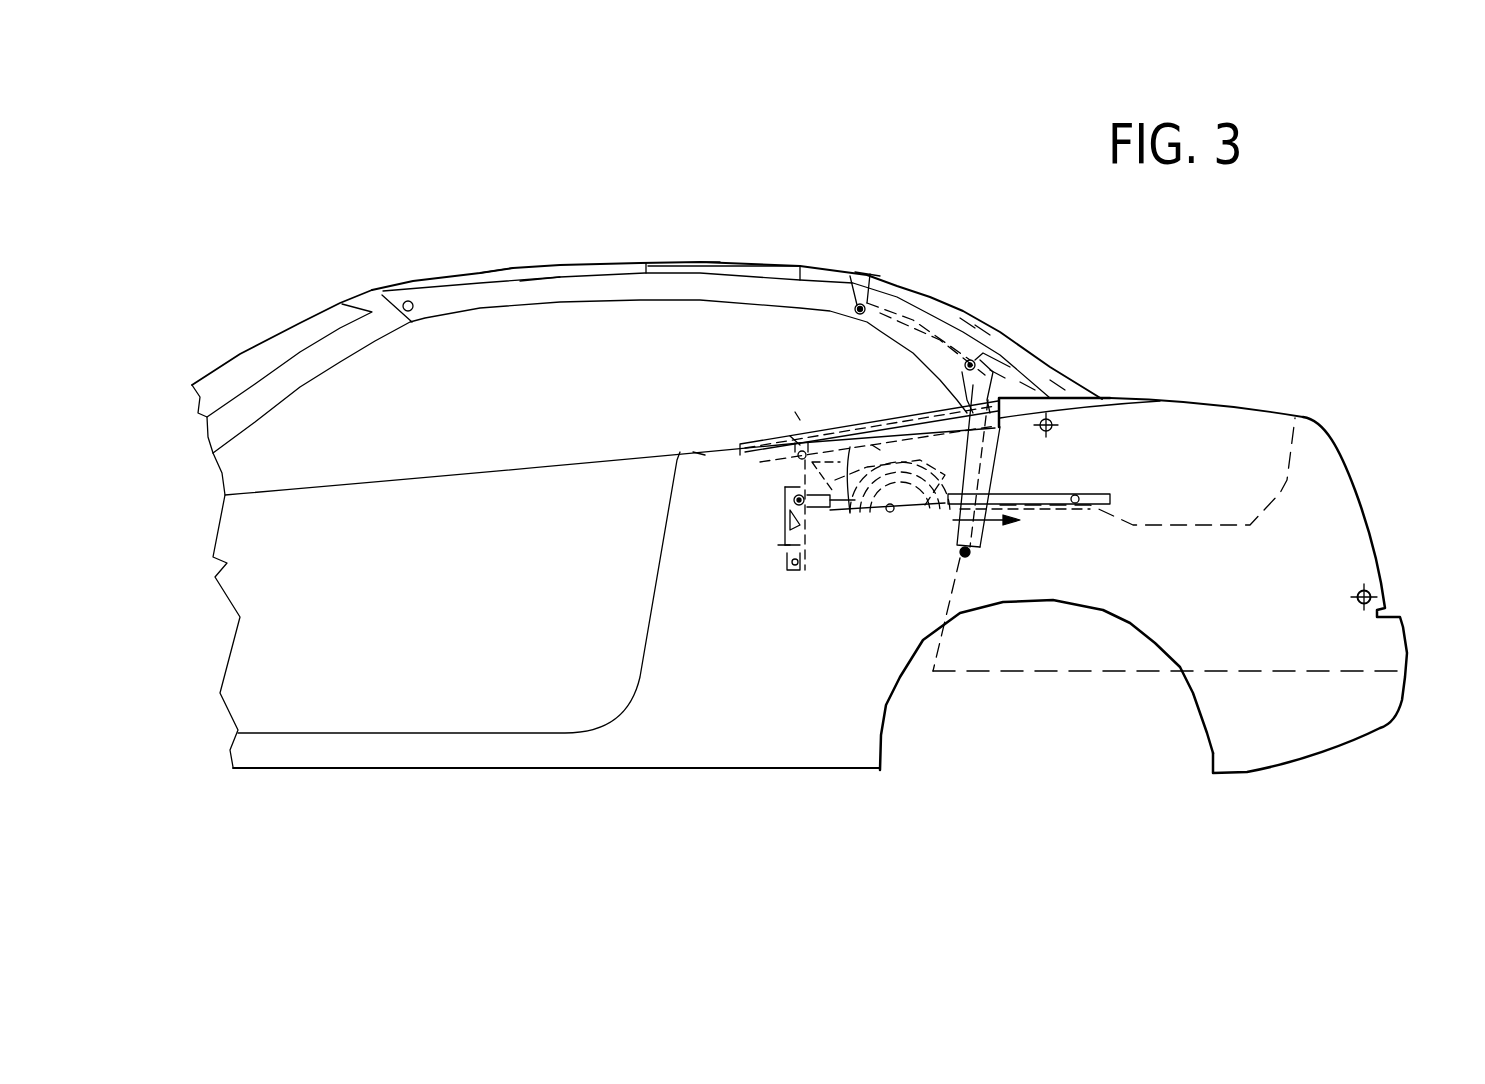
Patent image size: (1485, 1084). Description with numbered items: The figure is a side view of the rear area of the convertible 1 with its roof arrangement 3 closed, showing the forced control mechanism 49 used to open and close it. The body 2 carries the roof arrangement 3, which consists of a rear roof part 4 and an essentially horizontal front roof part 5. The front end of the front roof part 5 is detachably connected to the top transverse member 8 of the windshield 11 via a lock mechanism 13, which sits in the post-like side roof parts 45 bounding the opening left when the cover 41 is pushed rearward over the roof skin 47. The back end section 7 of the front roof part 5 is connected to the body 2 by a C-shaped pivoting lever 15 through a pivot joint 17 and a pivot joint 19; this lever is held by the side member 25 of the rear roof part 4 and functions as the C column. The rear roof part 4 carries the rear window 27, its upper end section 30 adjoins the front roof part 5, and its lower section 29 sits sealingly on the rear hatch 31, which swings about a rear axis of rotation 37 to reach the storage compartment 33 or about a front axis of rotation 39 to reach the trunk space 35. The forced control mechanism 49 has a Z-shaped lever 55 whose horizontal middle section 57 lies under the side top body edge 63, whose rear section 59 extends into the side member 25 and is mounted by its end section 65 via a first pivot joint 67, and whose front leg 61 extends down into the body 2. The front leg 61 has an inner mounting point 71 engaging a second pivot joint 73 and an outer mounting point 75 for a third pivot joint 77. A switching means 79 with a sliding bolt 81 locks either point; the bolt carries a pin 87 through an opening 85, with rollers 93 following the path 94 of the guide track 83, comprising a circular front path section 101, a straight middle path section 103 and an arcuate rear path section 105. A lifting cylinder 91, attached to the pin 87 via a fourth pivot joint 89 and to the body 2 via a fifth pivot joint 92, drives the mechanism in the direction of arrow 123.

The convertible 1 is at (388, 235).
The body 2 is at (688, 683).
The roof arrangement 3 is at (741, 254).
The rear roof part 4 is at (963, 318).
The front roof part 5 is at (661, 268).
The back end section 7 is at (838, 277).
The top transverse member 8 is at (374, 298).
The windshield 11 is at (278, 348).
The lock mechanism 13 is at (410, 301).
The pivoting lever 15 is at (927, 340).
The pivot joint 17 is at (863, 304).
The pivot joint 19 is at (977, 556).
The side member 25 is at (957, 305).
The rear window 27 is at (990, 340).
The lower section 29 is at (1058, 382).
The upper end section 30 is at (867, 277).
The rear hatch 31 is at (1233, 400).
The storage compartment 33 is at (1238, 497).
The trunk space 35 is at (1281, 580).
The rear axis of rotation 37 is at (1372, 595).
The front axis of rotation 39 is at (1057, 427).
The cover 41 is at (490, 272).
The side roof part 45 is at (533, 286).
The roof skin 47 is at (708, 263).
The forced control mechanism 49 is at (797, 443).
The Z-shaped lever 55 is at (850, 508).
The middle section 57 is at (917, 445).
The rear section 59 is at (1027, 383).
The front leg 61 is at (775, 560).
The side top body edge 63 is at (693, 455).
The end section 65 is at (995, 372).
The first pivot joint 67 is at (978, 325).
The inner mounting point 71 is at (795, 430).
The second pivot joint 73 is at (775, 443).
The outer mounting point 75 is at (803, 562).
The third pivot joint 77 is at (889, 515).
The switching means 79 is at (742, 498).
The sliding bolt 81 is at (793, 540).
The guide track 83 is at (877, 444).
The opening 85 is at (793, 530).
The pin 87 is at (790, 522).
The fourth pivot joint 89 is at (790, 515).
The lifting cylinder 91 is at (1073, 502).
The fifth pivot joint 92 is at (1097, 505).
The roller 93 is at (693, 452).
The path 94 is at (857, 447).
The front path section 101 is at (793, 500).
The middle path section 103 is at (791, 404).
The rear path section 105 is at (957, 548).
The arrow 123 is at (970, 553).